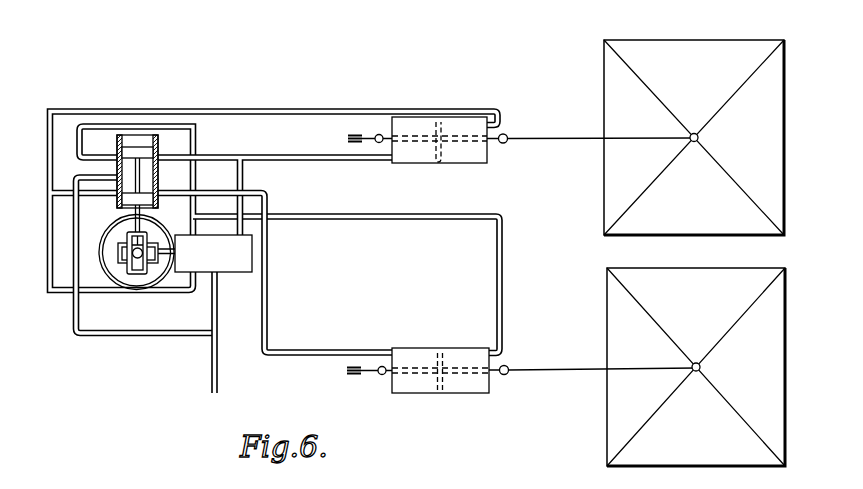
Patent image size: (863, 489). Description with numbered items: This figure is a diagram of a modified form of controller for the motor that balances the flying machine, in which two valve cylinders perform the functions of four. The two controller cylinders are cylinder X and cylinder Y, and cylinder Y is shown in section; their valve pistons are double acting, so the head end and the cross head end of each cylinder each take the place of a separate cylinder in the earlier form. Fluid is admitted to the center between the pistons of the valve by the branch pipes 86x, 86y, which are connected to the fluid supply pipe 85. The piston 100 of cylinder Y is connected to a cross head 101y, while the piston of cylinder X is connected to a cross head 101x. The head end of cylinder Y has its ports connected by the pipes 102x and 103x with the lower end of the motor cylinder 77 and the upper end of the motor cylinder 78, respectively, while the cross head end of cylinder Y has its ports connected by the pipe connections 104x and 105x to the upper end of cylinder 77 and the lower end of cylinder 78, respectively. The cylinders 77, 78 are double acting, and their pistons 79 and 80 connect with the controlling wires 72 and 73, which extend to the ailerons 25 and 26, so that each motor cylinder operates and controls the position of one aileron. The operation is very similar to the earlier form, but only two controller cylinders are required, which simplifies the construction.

The aileron 25 is at (705, 45).
The aileron 26 is at (641, 457).
The controlling wire 72 is at (542, 138).
The controlling wire 73 is at (542, 370).
The cylinder 77 is at (457, 123).
The cylinder 78 is at (427, 388).
The piston 79 is at (438, 164).
The piston 80 is at (436, 357).
The fluid supply pipe 85 is at (217, 378).
The branch pipe 86x is at (216, 298).
The branch pipe 86y is at (73, 245).
The piston 100 is at (139, 150).
The cross head 101x is at (133, 273).
The cross head 101y is at (154, 264).
The pipe 102x is at (273, 157).
The pipe 103x is at (196, 132).
The pipe connection 104x is at (307, 110).
The pipe connection 105x is at (200, 191).
The cylinder X is at (252, 255).
The cylinder Y is at (127, 136).